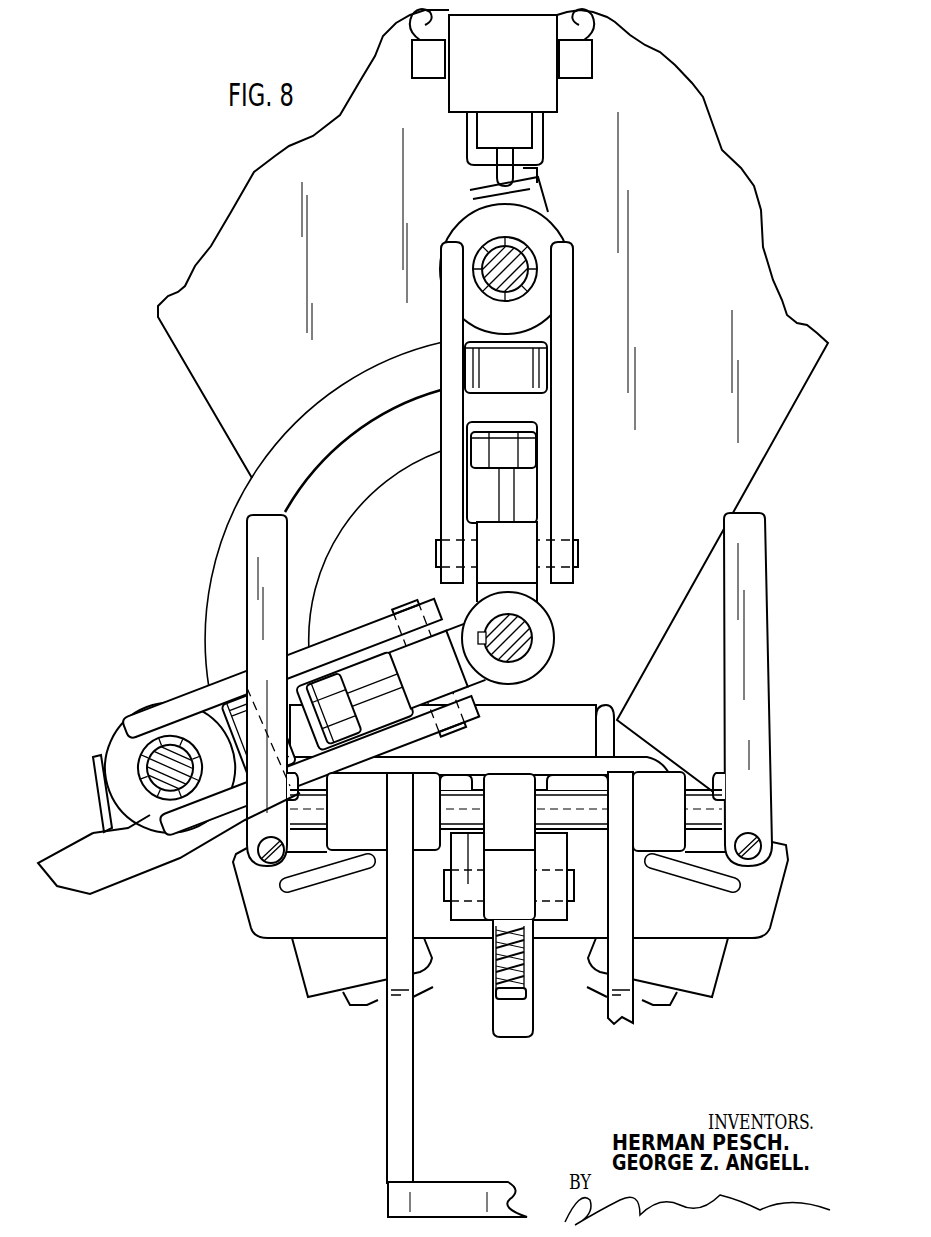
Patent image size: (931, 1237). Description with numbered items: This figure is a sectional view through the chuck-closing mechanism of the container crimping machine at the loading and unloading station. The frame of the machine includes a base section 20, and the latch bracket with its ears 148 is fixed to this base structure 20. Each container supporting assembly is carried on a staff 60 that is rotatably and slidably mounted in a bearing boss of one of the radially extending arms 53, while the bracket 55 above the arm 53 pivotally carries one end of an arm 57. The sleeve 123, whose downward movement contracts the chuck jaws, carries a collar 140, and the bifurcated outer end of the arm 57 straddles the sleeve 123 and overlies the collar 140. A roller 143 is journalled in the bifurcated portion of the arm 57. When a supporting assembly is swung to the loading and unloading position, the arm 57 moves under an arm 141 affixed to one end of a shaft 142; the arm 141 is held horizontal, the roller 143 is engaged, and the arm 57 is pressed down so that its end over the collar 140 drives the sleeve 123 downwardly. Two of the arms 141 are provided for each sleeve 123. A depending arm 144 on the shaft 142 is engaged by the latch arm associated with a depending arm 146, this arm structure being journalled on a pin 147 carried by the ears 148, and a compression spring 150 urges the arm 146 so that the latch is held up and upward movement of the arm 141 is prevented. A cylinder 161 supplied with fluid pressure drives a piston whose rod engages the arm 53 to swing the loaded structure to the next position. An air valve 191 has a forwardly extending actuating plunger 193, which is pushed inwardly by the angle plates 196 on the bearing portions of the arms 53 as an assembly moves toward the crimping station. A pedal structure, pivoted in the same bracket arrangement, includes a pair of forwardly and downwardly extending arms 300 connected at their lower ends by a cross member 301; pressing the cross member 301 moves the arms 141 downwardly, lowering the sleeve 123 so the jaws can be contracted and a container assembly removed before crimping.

The base section 20 is at (662, 489).
The air valve 191 is at (511, 84).
The actuating plunger 193 is at (500, 171).
The angle plate 196 is at (93, 773).
The collar 140 is at (138, 785).
The sleeve 123 is at (194, 754).
The staff 60 is at (186, 776).
The roller 143 is at (237, 712).
The arm 57 is at (207, 697).
The arm 53 is at (388, 686).
The bracket 55 is at (522, 582).
The arm 141 is at (757, 562).
The shaft 142 is at (590, 818).
The depending arm 144 is at (525, 829).
The ears 148 is at (570, 858).
The pin 147 is at (576, 882).
The arm 300 is at (640, 908).
The cylinder 161 is at (672, 981).
The compression spring 150 is at (496, 971).
The depending arm 146 is at (533, 971).
The cross member 301 is at (464, 1215).